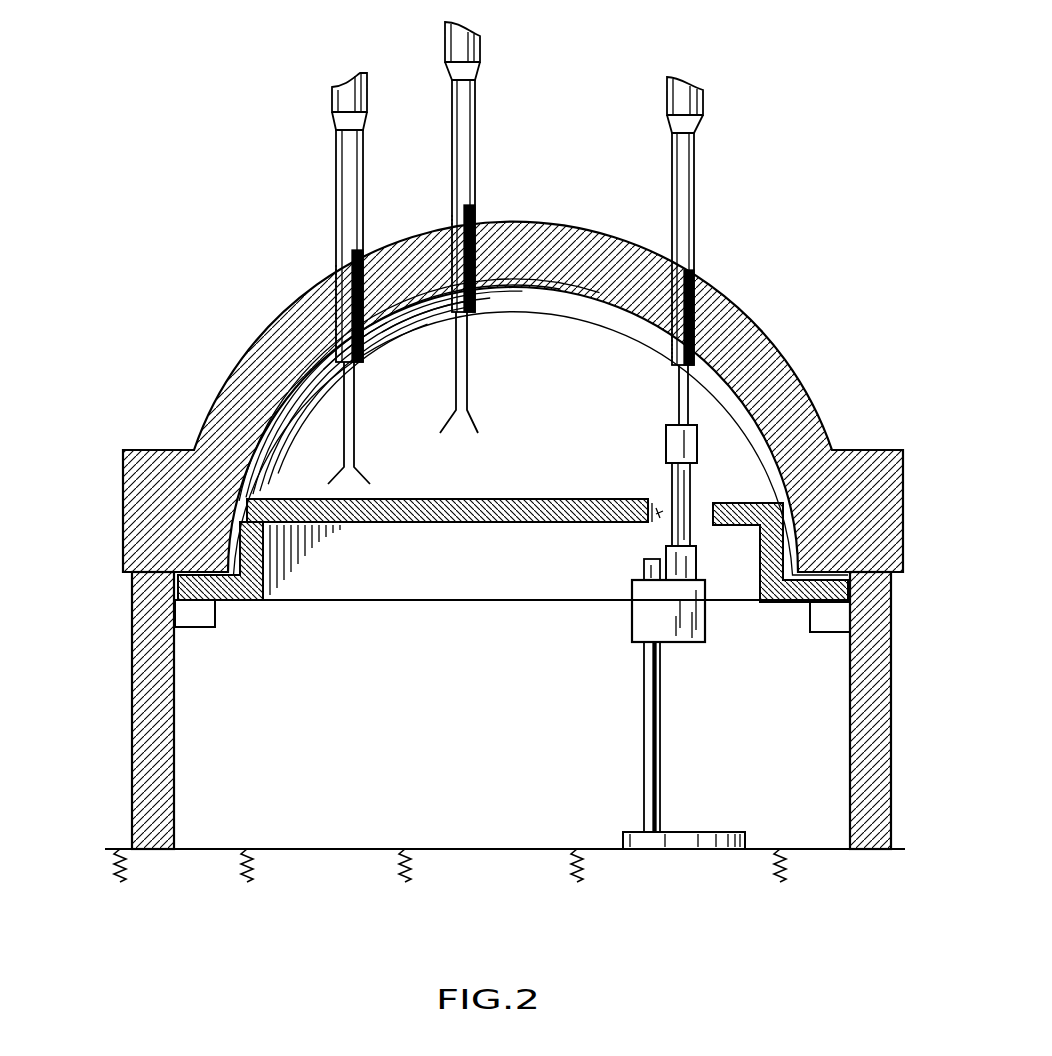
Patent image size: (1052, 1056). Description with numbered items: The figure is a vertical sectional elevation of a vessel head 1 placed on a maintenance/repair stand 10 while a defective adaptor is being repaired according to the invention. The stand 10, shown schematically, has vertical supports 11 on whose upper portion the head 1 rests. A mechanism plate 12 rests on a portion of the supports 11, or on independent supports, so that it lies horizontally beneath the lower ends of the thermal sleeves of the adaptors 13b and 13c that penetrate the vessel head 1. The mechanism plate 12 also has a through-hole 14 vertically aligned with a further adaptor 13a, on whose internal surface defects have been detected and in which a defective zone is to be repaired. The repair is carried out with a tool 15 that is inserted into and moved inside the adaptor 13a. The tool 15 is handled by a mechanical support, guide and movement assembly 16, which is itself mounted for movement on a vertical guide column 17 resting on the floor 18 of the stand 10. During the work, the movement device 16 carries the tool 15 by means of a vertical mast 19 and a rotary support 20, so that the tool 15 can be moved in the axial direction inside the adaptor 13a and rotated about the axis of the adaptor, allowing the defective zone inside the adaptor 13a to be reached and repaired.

The vessel head 1 is at (770, 370).
The maintenance/repair stand 10 is at (128, 742).
The vertical supports 11 is at (160, 792).
The mechanism plate 12 is at (378, 510).
The adaptor 13a is at (681, 187).
The adaptor 13b is at (470, 157).
The adaptor 13c is at (358, 190).
The through-hole 14 is at (650, 525).
The tool 15 is at (699, 380).
The mechanical support, guide and movement assembly 16 is at (713, 620).
The vertical guide column 17 is at (651, 670).
The floor 18 is at (460, 901).
The vertical mast 19 is at (677, 485).
The rotary support 20 is at (677, 440).